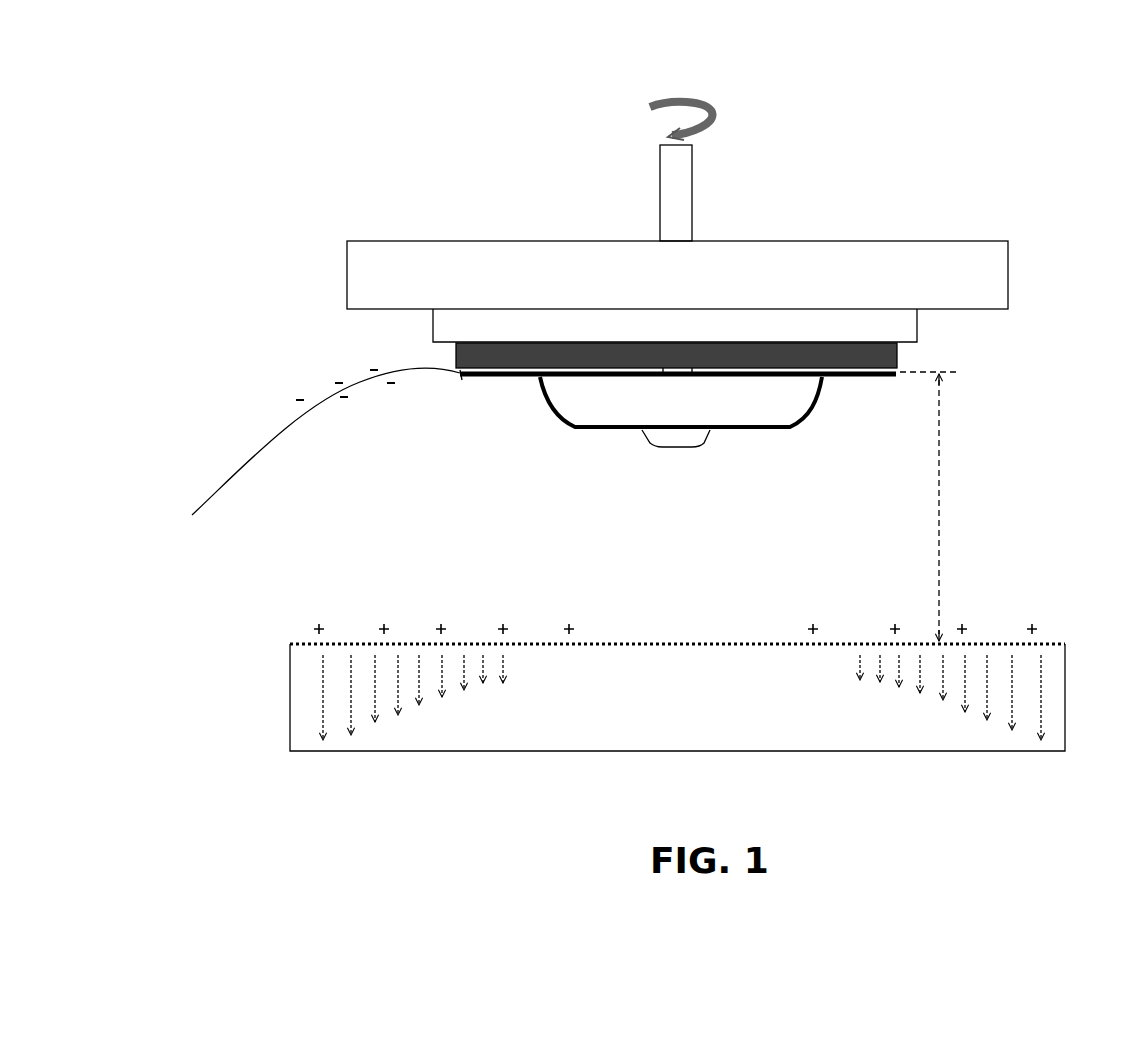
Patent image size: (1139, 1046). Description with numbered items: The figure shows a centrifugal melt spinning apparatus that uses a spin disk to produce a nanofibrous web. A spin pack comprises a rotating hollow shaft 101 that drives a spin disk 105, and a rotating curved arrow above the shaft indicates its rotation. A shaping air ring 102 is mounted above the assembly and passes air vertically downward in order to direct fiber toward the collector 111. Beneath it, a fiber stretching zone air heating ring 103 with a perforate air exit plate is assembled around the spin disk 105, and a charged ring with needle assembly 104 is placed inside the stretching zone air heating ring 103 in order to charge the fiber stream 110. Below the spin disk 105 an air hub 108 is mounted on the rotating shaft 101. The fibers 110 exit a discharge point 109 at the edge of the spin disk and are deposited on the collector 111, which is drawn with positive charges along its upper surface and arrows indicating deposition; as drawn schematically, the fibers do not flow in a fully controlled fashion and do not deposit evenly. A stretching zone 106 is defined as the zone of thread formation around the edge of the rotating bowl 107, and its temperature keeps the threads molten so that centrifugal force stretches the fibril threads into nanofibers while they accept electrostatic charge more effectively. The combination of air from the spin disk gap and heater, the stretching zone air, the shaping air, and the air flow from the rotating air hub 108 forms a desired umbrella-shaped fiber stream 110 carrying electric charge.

The rotating hollow shaft 101 is at (702, 183).
The shaping air ring 102 is at (1008, 280).
The fiber stretching zone air heating ring 103 is at (927, 328).
The charged ring with needle assembly 104 is at (902, 355).
The spin disk 105 is at (854, 384).
The stretching zone 106 is at (958, 505).
The rotating bowl 107 is at (805, 424).
The air hub 108 is at (695, 452).
The discharge point 109 is at (463, 384).
The fiber stream 110 is at (283, 430).
The collector 111 is at (677, 687).